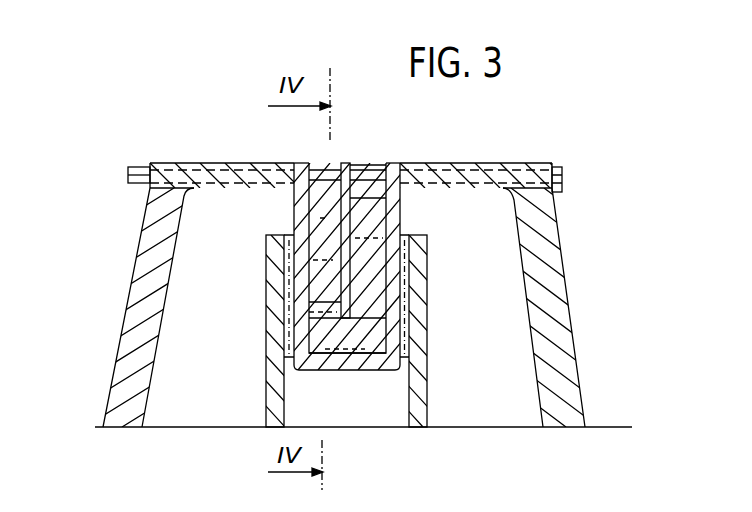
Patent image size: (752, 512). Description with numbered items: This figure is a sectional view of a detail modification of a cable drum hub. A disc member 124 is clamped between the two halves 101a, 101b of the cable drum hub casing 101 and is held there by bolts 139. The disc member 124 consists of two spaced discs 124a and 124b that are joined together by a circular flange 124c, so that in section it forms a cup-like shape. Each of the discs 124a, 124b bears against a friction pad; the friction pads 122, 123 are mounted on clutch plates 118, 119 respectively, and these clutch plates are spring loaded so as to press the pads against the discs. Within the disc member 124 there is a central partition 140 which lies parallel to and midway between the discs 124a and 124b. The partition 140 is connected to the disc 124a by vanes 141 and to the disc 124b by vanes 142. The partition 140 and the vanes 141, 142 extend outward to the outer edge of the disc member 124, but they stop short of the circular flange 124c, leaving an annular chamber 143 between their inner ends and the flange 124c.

The cable drum hub casing 101 is at (552, 222).
The casing half 101a is at (140, 292).
The casing half 101b is at (533, 265).
The clutch plate 118 is at (275, 372).
The clutch plate 119 is at (415, 372).
The friction pad 122 is at (282, 313).
The friction pad 123 is at (403, 287).
The disc member 124 is at (337, 374).
The disc 124a is at (297, 207).
The disc 124b is at (402, 225).
The circular flange 124c is at (370, 368).
The bolt 139 is at (374, 165).
The central partition 140 is at (352, 225).
The vane 141 is at (320, 275).
The vane 142 is at (370, 300).
The annular chamber 143 is at (343, 340).